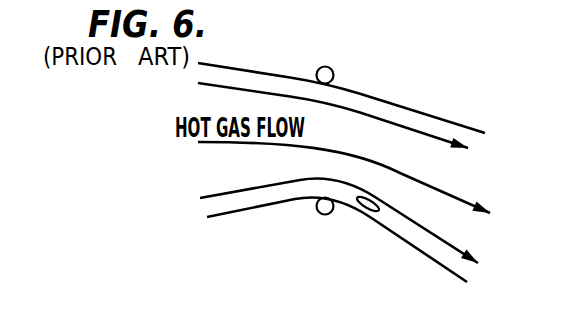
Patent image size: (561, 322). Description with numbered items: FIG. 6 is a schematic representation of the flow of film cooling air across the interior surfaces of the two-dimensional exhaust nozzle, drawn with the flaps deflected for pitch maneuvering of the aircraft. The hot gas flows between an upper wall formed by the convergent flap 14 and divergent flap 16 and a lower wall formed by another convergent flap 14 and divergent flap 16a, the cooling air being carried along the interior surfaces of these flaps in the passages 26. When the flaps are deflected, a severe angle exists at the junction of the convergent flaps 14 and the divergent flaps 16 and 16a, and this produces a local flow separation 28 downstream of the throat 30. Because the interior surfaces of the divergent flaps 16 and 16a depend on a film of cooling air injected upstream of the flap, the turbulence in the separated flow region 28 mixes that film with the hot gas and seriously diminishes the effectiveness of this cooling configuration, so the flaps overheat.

The convergent flap 14 is at (262, 73).
The divergent flap 16 is at (390, 104).
The divergent flap 16a is at (425, 256).
The cooling air passage 26 is at (433, 139).
The local flow separation 28 is at (362, 213).
The throat 30 is at (333, 118).